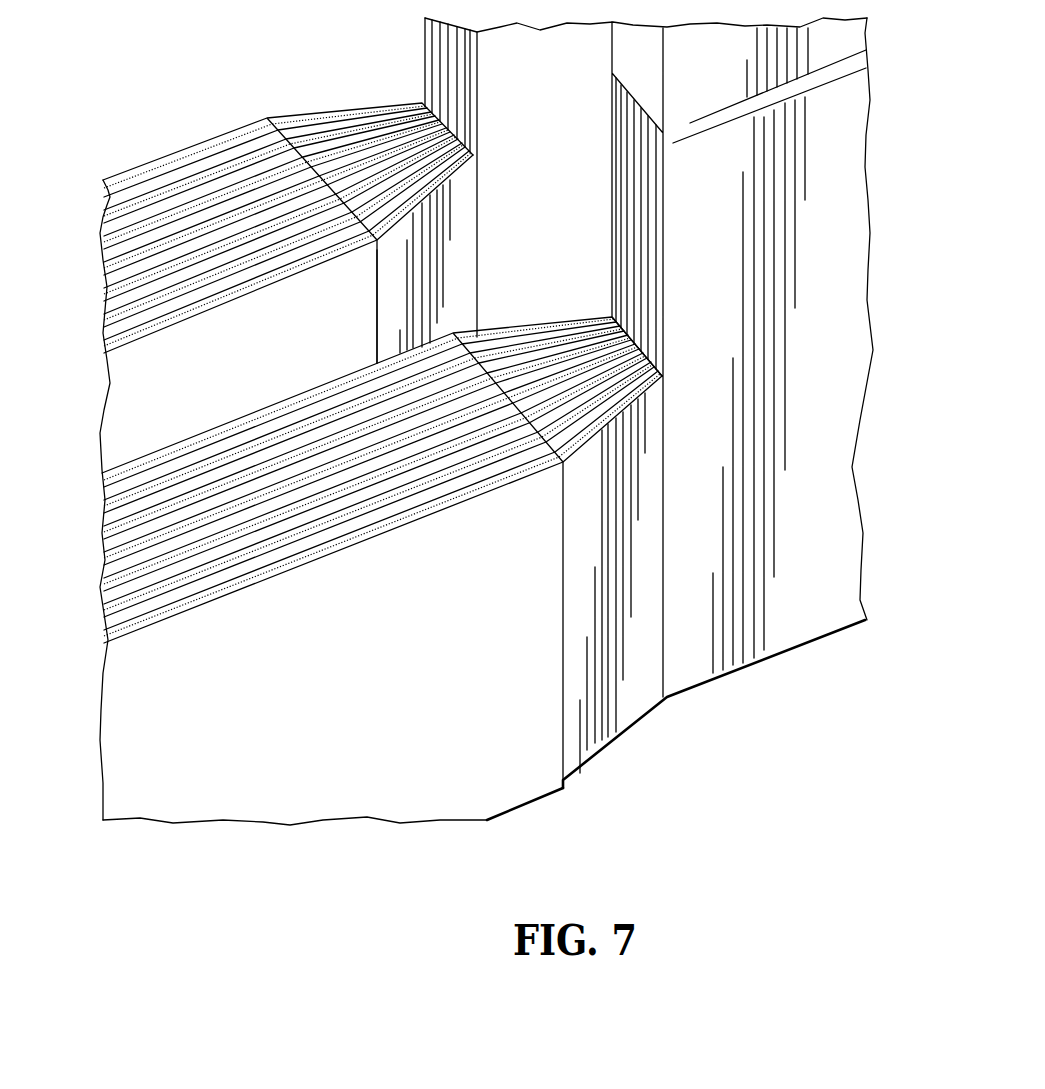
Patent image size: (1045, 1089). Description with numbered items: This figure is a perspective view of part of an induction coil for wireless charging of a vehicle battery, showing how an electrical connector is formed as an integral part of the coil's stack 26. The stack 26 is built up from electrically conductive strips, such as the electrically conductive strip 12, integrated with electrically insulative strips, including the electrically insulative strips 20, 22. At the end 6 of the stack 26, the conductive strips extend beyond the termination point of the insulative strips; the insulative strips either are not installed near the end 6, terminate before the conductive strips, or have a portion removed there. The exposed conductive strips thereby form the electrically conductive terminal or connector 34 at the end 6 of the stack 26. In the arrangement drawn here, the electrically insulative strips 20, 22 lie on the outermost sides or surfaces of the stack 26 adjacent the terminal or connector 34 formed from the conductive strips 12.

The end of the stack 6 is at (683, 428).
The electrically conductive strip 12 is at (115, 330).
The electrically insulative strip 20 is at (122, 390).
The electrically insulative strip 22 is at (508, 777).
The stack 26 is at (78, 225).
The electrically conductive terminal or connector 34 is at (803, 370).